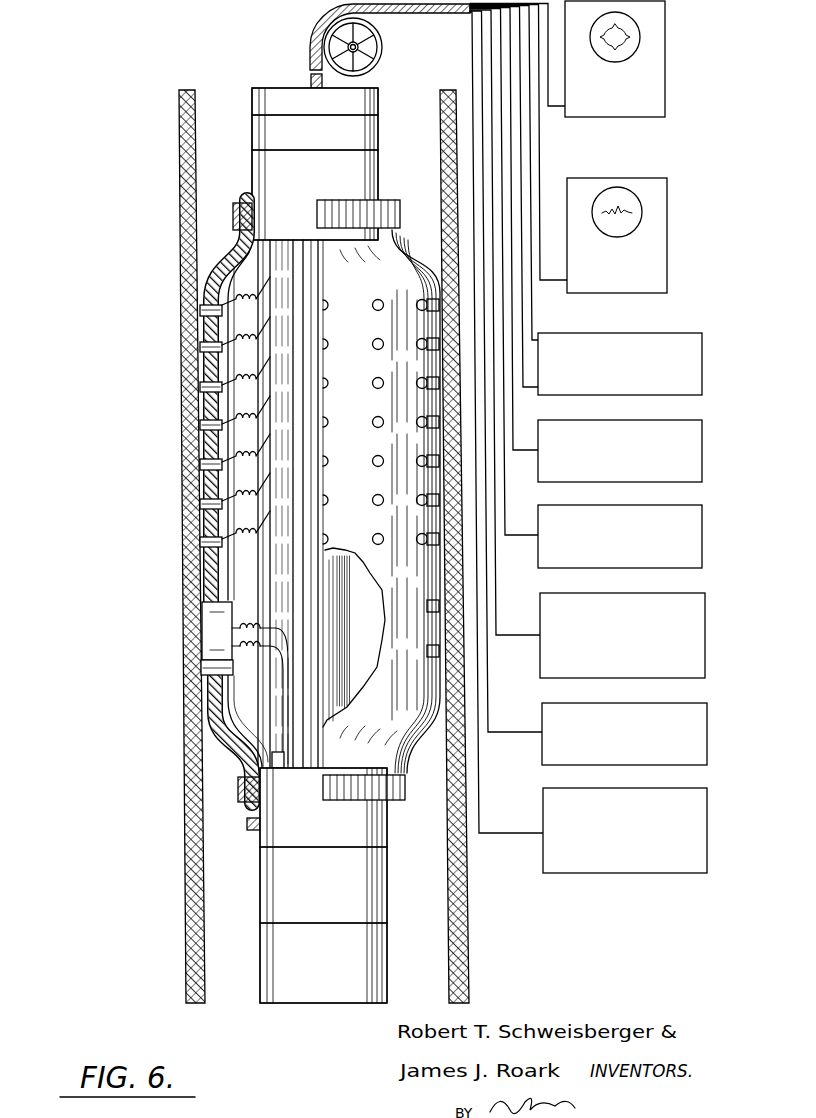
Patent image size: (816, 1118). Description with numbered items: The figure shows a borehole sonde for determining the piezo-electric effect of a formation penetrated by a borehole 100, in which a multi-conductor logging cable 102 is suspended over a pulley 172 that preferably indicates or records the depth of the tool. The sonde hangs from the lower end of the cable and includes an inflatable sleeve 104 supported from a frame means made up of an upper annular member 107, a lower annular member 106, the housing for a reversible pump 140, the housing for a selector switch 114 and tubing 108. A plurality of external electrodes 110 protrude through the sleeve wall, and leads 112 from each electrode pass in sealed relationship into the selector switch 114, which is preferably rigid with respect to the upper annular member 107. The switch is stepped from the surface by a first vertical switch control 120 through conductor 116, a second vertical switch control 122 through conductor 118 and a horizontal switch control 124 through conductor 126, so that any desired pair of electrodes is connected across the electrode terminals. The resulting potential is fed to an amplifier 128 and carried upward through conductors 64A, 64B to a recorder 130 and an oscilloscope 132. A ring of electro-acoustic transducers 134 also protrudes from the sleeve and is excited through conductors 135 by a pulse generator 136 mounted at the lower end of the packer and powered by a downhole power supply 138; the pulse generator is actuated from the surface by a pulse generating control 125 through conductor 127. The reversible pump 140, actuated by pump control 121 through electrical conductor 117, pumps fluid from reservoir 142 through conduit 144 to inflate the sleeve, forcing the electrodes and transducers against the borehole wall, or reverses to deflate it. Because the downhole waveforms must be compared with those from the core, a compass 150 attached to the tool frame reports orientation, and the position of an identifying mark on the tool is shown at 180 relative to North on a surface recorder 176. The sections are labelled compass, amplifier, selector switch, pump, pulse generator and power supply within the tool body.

The borehole 100 is at (429, 164).
The multi-conductor logging cable 102 is at (312, 48).
The inflatable sleeve 104 is at (210, 723).
The lower annular member 106 is at (238, 788).
The upper annular member 107 is at (236, 215).
The tubing 108 is at (295, 590).
The external electrodes 110 is at (204, 385).
The leads 112 is at (236, 452).
The selector switch 114 is at (252, 170).
The conductor 116 is at (525, 478).
The electrical conductor 117 is at (490, 725).
The conductor 118 is at (515, 563).
The first vertical switch control 120 is at (668, 420).
The pump control 121 is at (622, 703).
The second vertical switch control 122 is at (668, 505).
The horizontal switch control 124 is at (672, 593).
The pulse generating control 125 is at (630, 788).
The conductor 126 is at (499, 633).
The conductor 127 is at (481, 826).
The amplifier 128 is at (252, 128).
The recorder 130 is at (675, 333).
The oscilloscope 132 is at (667, 187).
The electro-acoustic transducers 134 is at (190, 658).
The conductors 135 is at (275, 612).
The pulse generator 136 is at (387, 892).
The downhole power supply 138 is at (387, 960).
The reversible pump 140 is at (387, 826).
The reservoir 142 is at (254, 944).
The conduit 144 is at (278, 750).
The compass 150 is at (270, 88).
The pulley 172 is at (374, 50).
The surface recorder 176 is at (667, 50).
The identifying mark position 180 is at (608, 45).
The conductor 64A is at (537, 326).
The recorder conductor 64B is at (524, 390).